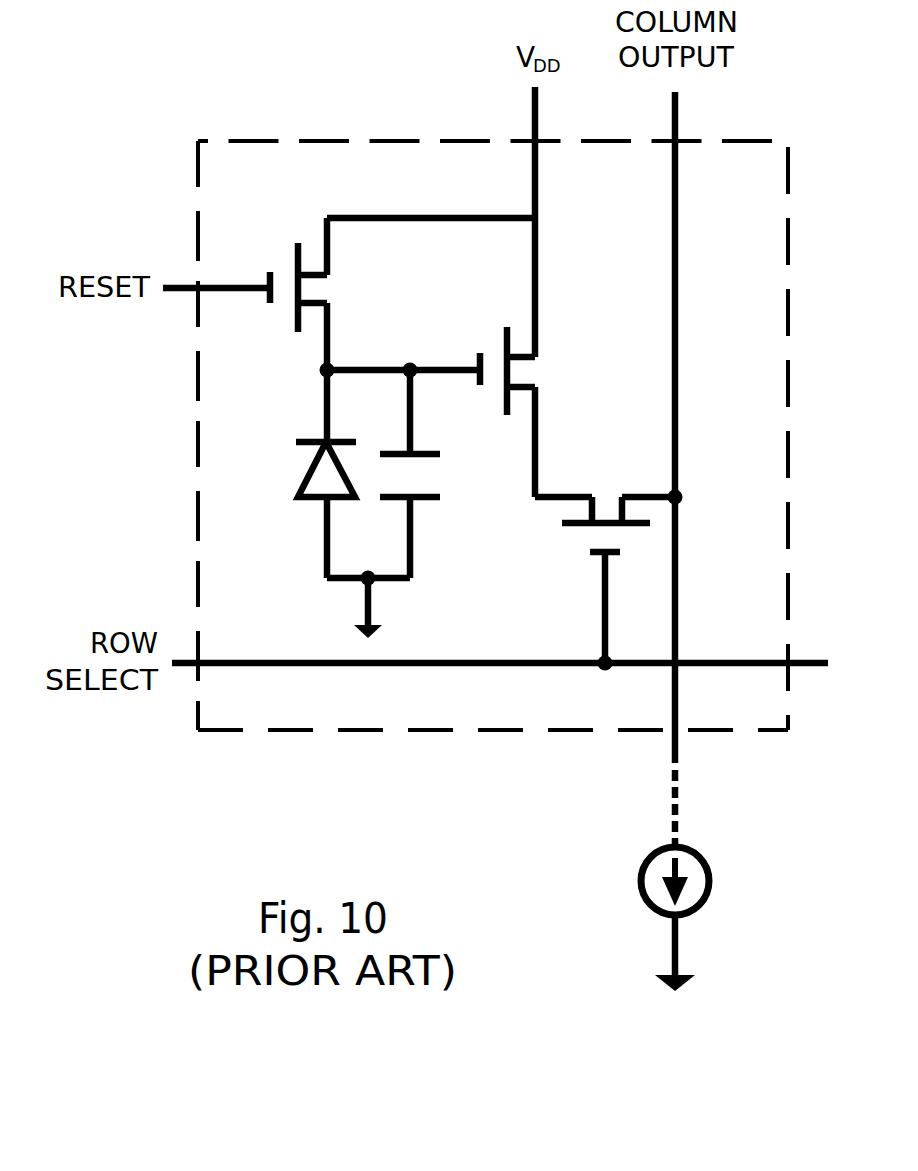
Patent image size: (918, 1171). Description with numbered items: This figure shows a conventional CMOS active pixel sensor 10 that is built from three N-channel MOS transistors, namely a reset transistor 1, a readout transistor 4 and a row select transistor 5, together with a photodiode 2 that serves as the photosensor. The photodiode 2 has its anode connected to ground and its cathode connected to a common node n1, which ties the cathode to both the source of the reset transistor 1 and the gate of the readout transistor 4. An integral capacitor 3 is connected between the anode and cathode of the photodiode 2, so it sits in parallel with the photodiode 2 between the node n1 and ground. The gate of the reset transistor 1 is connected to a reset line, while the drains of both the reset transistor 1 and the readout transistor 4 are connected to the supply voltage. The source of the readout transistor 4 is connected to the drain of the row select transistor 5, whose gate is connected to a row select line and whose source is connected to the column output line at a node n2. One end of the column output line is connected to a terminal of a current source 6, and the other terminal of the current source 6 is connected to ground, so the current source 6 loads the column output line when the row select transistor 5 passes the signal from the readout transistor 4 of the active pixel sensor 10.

The CMOS active pixel sensor 10 is at (170, 180).
The reset transistor 1 is at (285, 298).
The photodiode 2 is at (298, 470).
The integral capacitor 3 is at (438, 472).
The readout transistor 4 is at (537, 370).
The row select transistor 5 is at (603, 485).
The current source 6 is at (705, 857).
The node n1 is at (412, 367).
The node n2 is at (698, 493).